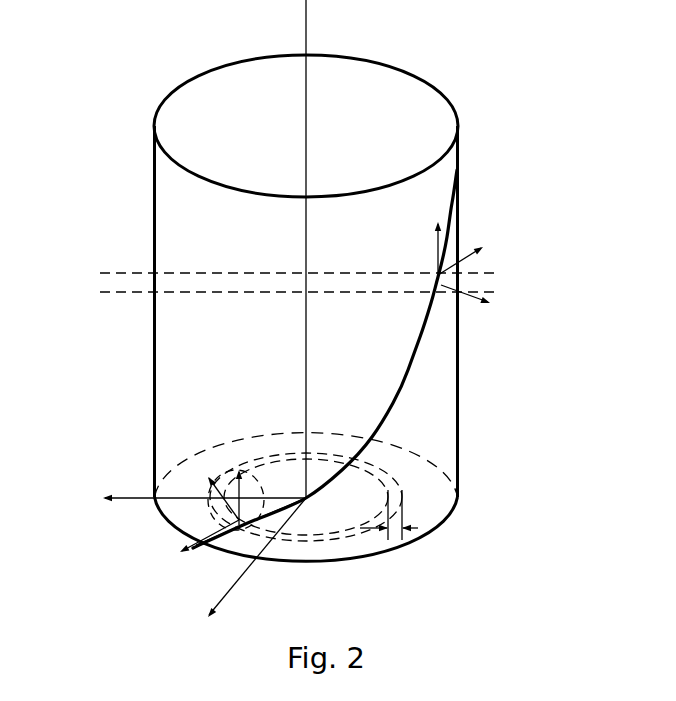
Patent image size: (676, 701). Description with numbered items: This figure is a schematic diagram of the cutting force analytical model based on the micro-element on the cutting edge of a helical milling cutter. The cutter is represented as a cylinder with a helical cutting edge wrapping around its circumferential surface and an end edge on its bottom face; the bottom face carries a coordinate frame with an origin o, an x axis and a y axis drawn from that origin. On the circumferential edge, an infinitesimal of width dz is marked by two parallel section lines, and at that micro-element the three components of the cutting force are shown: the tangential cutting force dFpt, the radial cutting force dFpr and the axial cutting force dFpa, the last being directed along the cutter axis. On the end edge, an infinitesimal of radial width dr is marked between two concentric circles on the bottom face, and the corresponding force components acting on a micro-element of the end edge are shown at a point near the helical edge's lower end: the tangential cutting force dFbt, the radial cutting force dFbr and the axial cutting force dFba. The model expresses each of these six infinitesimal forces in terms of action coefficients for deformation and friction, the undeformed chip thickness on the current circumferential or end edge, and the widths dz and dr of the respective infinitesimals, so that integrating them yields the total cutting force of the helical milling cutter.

The width of the infinitesimal on the circumferential edge dz is at (111, 247).
The axial cutting force of an infinitesimal on the circumferential edge dFpa is at (407, 237).
The tangential cutting force of an infinitesimal on the circumferential edge dFpt is at (487, 251).
The radial cutting force of an infinitesimal on the circumferential edge dFpr is at (491, 304).
The width of the infinitesimal on the end edge dr is at (400, 515).
The x axis x is at (204, 487).
The y axis y is at (249, 557).
The origin of coordinate system o is at (317, 500).
The tangential cutting force of an infinitesimal on the end edge dFbt is at (205, 482).
The axial cutting force of an infinitesimal on the end edge dFba is at (265, 485).
The radial cutting force of an infinitesimal on the end edge dFbr is at (180, 542).